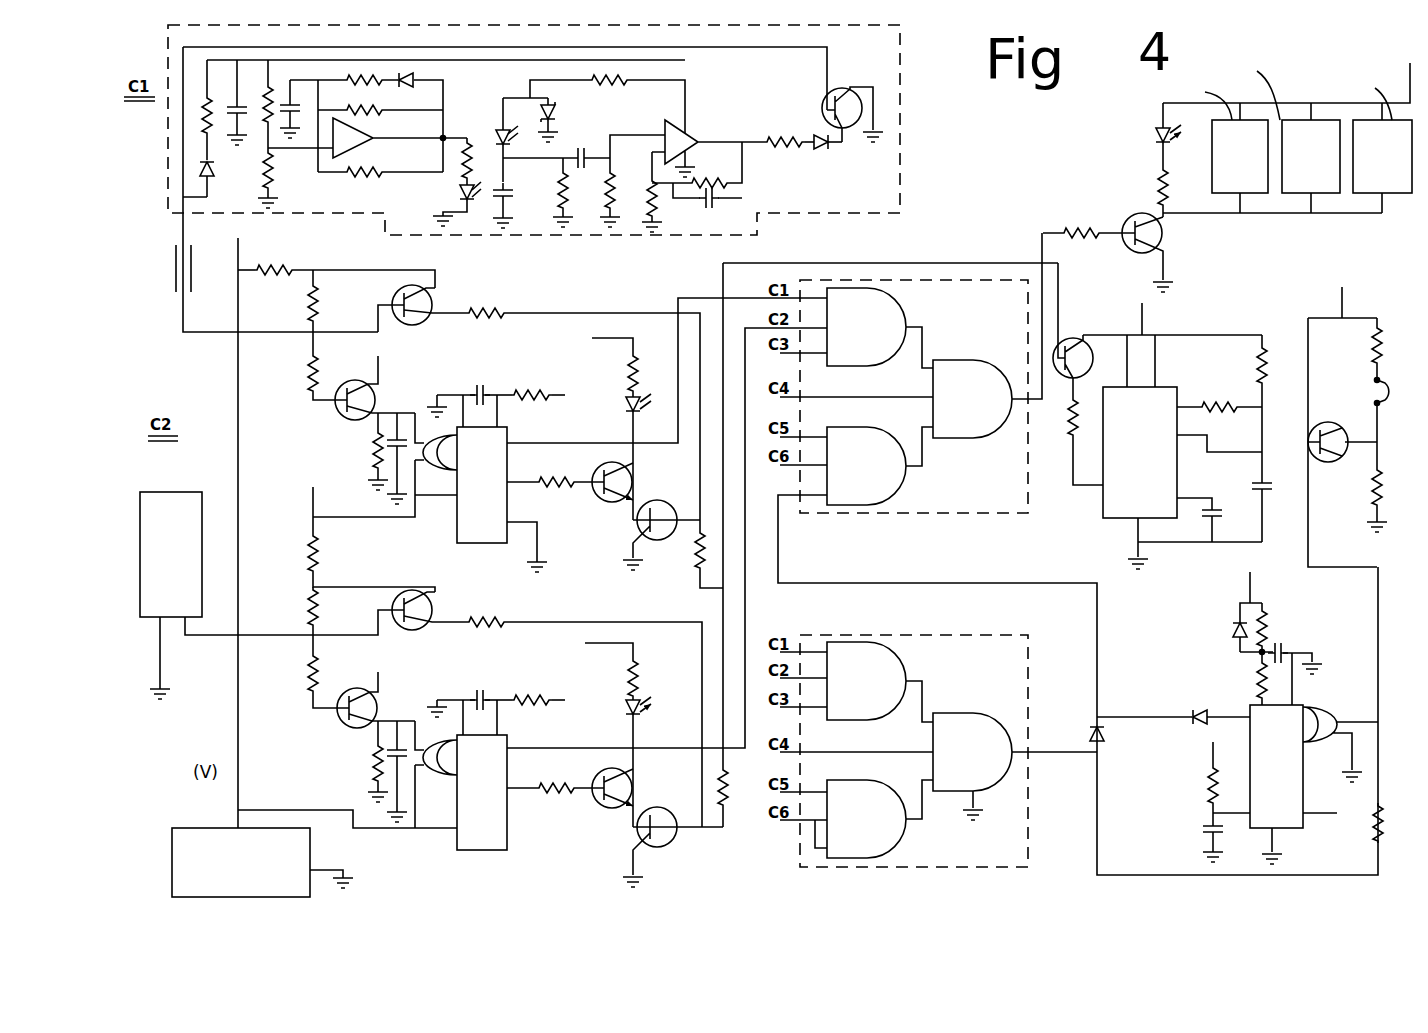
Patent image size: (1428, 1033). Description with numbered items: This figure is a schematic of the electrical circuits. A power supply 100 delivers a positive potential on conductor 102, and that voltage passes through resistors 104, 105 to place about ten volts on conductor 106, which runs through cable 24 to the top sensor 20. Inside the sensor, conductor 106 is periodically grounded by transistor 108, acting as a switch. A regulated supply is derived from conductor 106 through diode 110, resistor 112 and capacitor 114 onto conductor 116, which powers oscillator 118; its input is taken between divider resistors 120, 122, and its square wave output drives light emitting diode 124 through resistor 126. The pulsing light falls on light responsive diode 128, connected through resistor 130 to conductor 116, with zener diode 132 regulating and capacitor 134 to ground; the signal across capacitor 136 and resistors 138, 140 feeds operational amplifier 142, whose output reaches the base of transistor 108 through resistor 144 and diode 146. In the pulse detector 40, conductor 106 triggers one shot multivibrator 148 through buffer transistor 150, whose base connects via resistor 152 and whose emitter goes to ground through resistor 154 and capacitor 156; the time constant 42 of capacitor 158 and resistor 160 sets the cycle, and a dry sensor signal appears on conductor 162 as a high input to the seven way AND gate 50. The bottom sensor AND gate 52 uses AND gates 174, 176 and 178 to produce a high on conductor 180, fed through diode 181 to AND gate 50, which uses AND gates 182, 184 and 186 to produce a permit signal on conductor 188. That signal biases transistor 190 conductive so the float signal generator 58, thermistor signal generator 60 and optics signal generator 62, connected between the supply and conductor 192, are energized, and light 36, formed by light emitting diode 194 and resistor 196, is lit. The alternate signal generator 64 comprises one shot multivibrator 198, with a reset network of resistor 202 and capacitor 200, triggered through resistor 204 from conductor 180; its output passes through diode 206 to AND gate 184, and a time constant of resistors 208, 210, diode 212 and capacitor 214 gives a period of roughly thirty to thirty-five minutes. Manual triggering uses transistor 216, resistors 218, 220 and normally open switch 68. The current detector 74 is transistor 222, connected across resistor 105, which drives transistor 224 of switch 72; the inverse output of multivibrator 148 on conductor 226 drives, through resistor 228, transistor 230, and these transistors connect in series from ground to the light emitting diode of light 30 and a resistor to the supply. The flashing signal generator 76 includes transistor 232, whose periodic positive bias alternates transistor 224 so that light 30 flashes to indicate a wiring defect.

The sensor 20 is at (213, 497).
The cable 24 is at (193, 262).
The light 30 is at (661, 374).
The light 36 is at (1180, 147).
The pulse detector 40 is at (440, 485).
The time constant 42 is at (455, 385).
The seven way AND gate 50 is at (990, 520).
The AND gate 52 is at (915, 635).
The float signal generator 58 is at (1248, 200).
The thermistor signal generator 60 is at (1313, 200).
The optics signal generator 62 is at (1386, 200).
The alternate signal generator 64 is at (1348, 656).
The switch 68 is at (1386, 410).
The switch 72 is at (623, 526).
The current detector 74 is at (406, 264).
The flashing signal generator 76 is at (1214, 330).
The power supply 100 is at (222, 828).
The conductor 102 is at (238, 714).
The resistor 104 is at (272, 263).
The resistor 105 is at (318, 290).
The conductor 106 is at (722, 48).
The transistor 108 is at (836, 90).
The diode 110 is at (202, 170).
The resistor 112 is at (203, 113).
The capacitor 114 is at (243, 118).
The conductor 116 is at (466, 62).
The oscillator 118 is at (368, 143).
The resistor 120 is at (268, 150).
The resistor 122 is at (272, 175).
The light emitting diode 124 is at (462, 192).
The resistor 126 is at (462, 168).
The light responsive diode 128 is at (503, 133).
The resistor 130 is at (614, 84).
The zener diode 132 is at (553, 115).
The capacitor 134 is at (530, 184).
The capacitor 136 is at (584, 148).
The resistor 138 is at (568, 195).
The resistor 140 is at (616, 196).
The operational amplifier 142 is at (690, 134).
The resistor 144 is at (762, 145).
The diode 146 is at (825, 145).
The one shot multivibrator 148 is at (487, 507).
The transistor 150 is at (338, 420).
The resistor 152 is at (308, 366).
The resistor 154 is at (374, 462).
The capacitor 156 is at (400, 437).
The capacitor 158 is at (480, 385).
The resistor 160 is at (525, 388).
The conductor 162 is at (558, 440).
The AND gate 174 is at (628, 407).
The AND gate 176 is at (629, 372).
The AND gate 178 is at (950, 714).
The conductor 180 is at (1086, 748).
The diode 181 is at (1090, 730).
The AND gate 182 is at (900, 306).
The AND gate 184 is at (900, 480).
The AND gate 186 is at (950, 364).
The conductor 188 is at (1043, 230).
The transistor 190 is at (1150, 218).
The conductor 192 is at (1200, 215).
The light emitting diode 194 is at (1158, 131).
The resistor 196 is at (1158, 178).
The one shot multivibrator 198 is at (1306, 708).
The capacitor 200 is at (1205, 835).
The resistor 202 is at (1208, 790).
The resistor 204 is at (1375, 820).
The diode 206 is at (1200, 712).
The resistor 208 is at (1258, 674).
The resistor 210 is at (1268, 626).
The diode 212 is at (1235, 630).
The capacitor 214 is at (1284, 650).
The transistor 216 is at (1318, 460).
The resistor 218 is at (1372, 352).
The resistor 220 is at (1382, 512).
The transistor 222 is at (434, 300).
The transistor 224 is at (670, 540).
The conductor 226 is at (525, 482).
The resistor 228 is at (555, 490).
The transistor 230 is at (633, 479).
The transistor 232 is at (1066, 342).